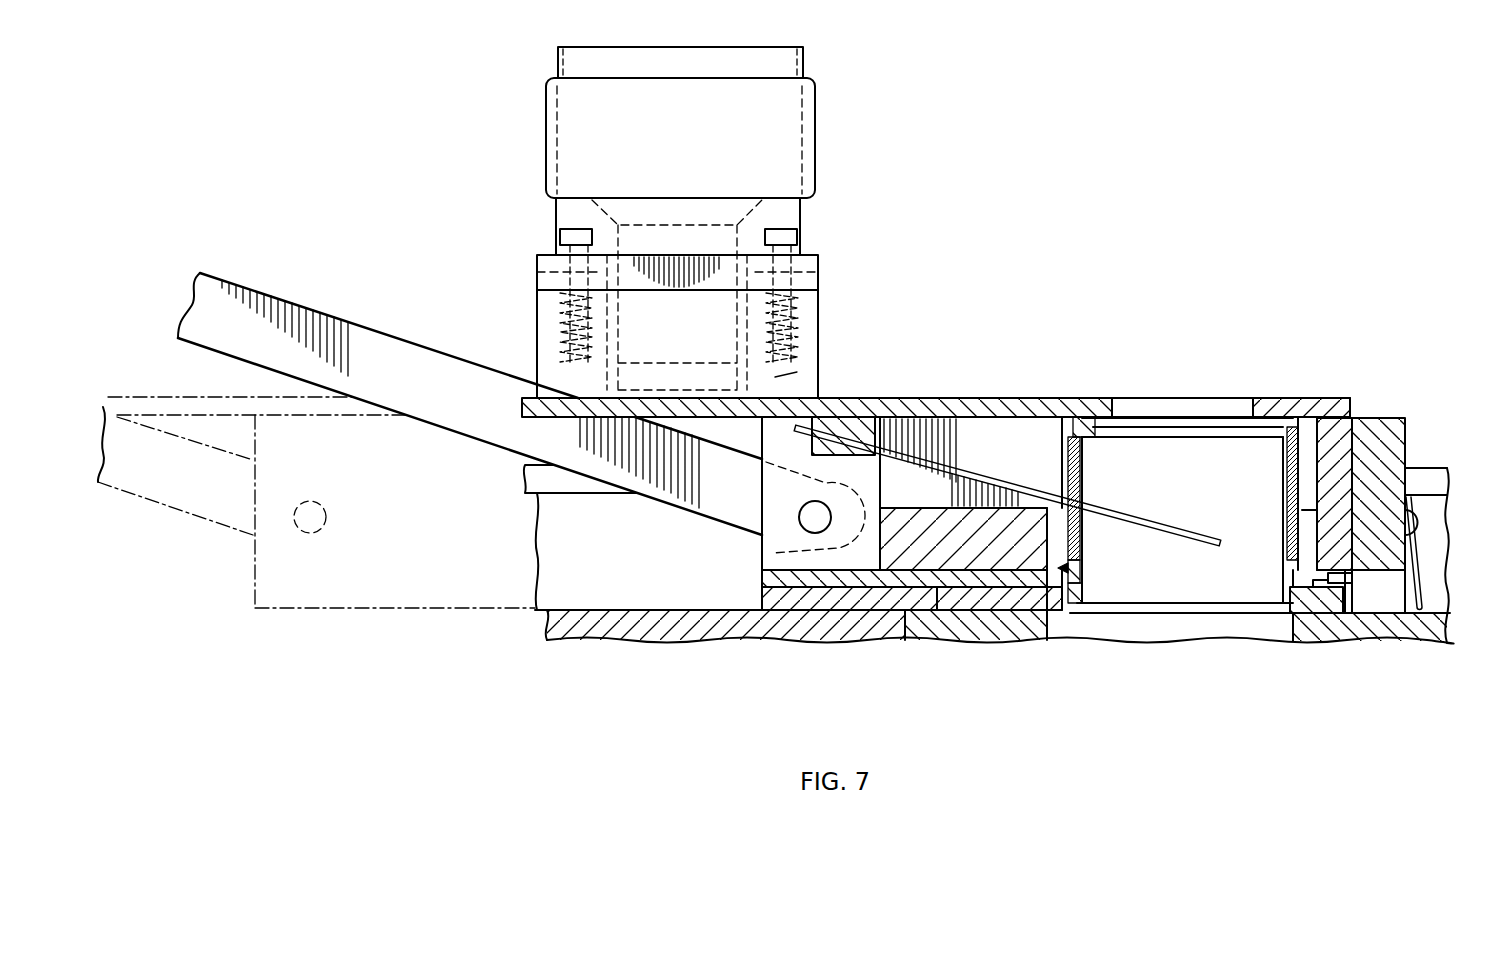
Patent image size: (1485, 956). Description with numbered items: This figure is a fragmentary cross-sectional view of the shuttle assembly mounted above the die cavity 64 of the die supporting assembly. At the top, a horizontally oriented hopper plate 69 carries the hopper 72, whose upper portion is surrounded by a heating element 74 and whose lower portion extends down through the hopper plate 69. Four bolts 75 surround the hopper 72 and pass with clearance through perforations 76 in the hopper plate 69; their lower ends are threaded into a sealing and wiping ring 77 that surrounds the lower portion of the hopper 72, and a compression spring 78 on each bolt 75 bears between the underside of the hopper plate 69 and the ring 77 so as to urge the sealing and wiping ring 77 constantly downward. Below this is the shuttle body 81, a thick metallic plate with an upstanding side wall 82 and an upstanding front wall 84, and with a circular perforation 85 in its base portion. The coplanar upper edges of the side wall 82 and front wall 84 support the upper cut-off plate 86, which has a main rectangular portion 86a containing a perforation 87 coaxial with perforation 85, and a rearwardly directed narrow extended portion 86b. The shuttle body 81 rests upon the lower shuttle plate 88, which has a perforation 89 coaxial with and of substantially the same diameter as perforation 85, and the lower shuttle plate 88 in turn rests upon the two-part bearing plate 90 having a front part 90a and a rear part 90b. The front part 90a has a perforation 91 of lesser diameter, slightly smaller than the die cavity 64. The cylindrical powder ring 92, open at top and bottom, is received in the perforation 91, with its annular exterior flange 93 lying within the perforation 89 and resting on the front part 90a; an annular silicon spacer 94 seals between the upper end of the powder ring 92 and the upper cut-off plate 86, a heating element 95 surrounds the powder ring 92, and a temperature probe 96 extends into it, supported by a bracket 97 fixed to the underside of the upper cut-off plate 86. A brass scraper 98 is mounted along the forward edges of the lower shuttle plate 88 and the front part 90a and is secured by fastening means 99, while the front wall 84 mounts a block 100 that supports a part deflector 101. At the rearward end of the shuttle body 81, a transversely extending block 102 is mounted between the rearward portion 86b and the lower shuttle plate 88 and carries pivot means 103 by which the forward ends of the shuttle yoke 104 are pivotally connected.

The die cavity 64 is at (1292, 630).
The hopper plate 69 is at (537, 283).
The hopper 72 is at (803, 58).
The heating element 74 is at (817, 105).
The bolts 75 is at (577, 232).
The perforations 76 is at (537, 271).
The sealing and wiping ring 77 is at (803, 374).
The compression spring 78 is at (557, 327).
The shuttle body 81 is at (893, 517).
The side wall 82 is at (975, 453).
The front wall 84 is at (1347, 440).
The circular perforation 85 is at (1057, 517).
The upper cut-off plate 86 is at (1340, 398).
The main rectangular portion 86a is at (1267, 398).
The rearwardly directed narrow extended portion 86b is at (857, 396).
The perforation 87 is at (1123, 395).
The lower shuttle plate 88 is at (775, 580).
The perforation 89 is at (1064, 568).
The bearing plate 90 is at (1317, 613).
The front part 90a is at (978, 600).
The rear part 90b is at (873, 605).
The perforation 91 is at (1060, 597).
The powder ring 92 is at (1082, 462).
The annular exterior flange 93 is at (1082, 586).
The annular silicon spacer 94 is at (1137, 402).
The heating element 95 is at (1293, 487).
The temperature probe 96 is at (1140, 520).
The bracket 97 is at (832, 457).
The brass scraper 98 is at (1363, 613).
The fastening means 99 is at (1360, 585).
The block 100 is at (1400, 443).
The part deflector 101 is at (1447, 600).
The transversely extending block 102 is at (773, 553).
The pivot means 103 is at (797, 510).
The shuttle yoke 104 is at (452, 407).